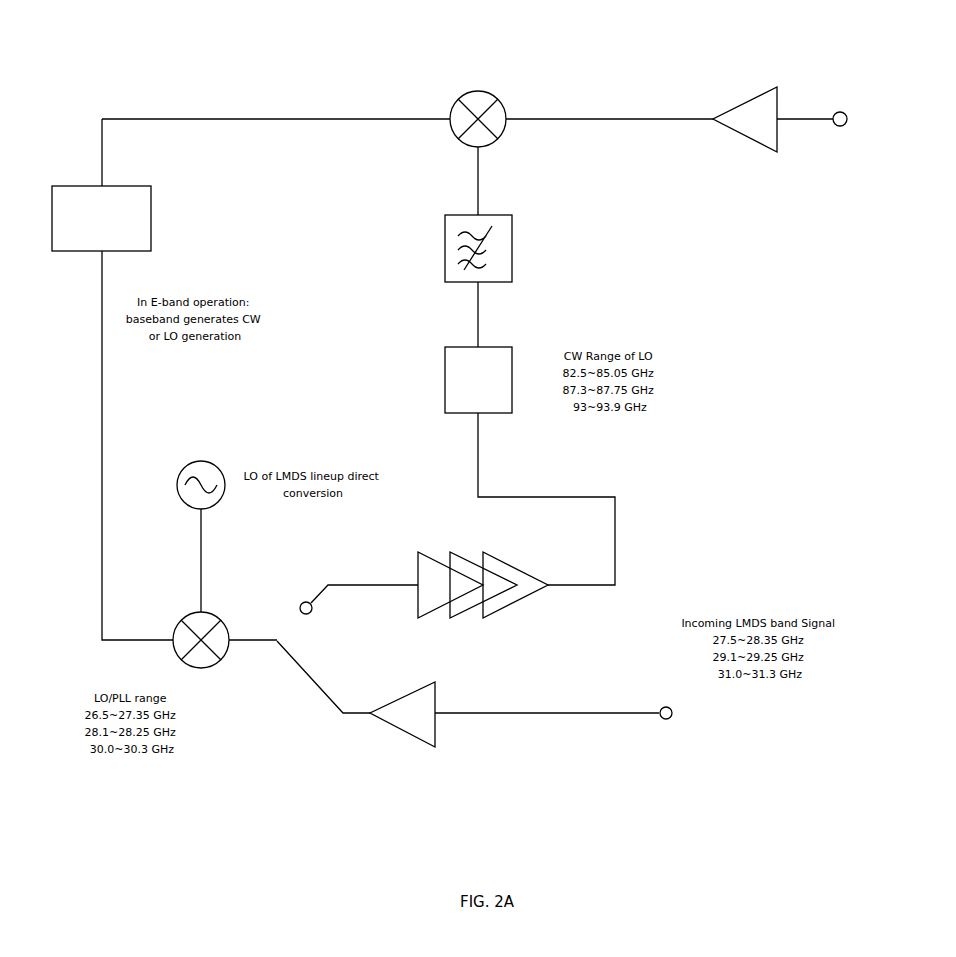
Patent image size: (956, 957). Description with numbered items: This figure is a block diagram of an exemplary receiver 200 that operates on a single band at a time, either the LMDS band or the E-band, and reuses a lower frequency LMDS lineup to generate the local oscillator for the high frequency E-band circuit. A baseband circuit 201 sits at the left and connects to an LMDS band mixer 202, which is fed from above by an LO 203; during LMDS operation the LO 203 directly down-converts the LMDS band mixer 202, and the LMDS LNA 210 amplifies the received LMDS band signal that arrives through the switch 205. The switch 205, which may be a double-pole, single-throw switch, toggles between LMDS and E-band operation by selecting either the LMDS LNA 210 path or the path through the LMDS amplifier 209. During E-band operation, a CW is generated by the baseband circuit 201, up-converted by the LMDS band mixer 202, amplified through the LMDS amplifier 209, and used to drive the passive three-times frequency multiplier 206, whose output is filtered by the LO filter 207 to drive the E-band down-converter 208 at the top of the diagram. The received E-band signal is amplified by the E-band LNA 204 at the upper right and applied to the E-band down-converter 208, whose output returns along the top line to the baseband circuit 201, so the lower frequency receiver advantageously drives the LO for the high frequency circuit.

The receiver 200 is at (273, 72).
The baseband circuit 201 is at (153, 198).
The LMDS band mixer 202 is at (231, 631).
The LO 203 is at (173, 487).
The E-band LNA 204 is at (768, 146).
The switch 205 is at (283, 631).
The passive 3× frequency multiplier 206 is at (437, 355).
The LO filter 207 is at (440, 232).
The E-band down-converter 208 is at (510, 128).
The LMDS amplifier 209 is at (508, 562).
The LMDS LNA 210 is at (440, 731).